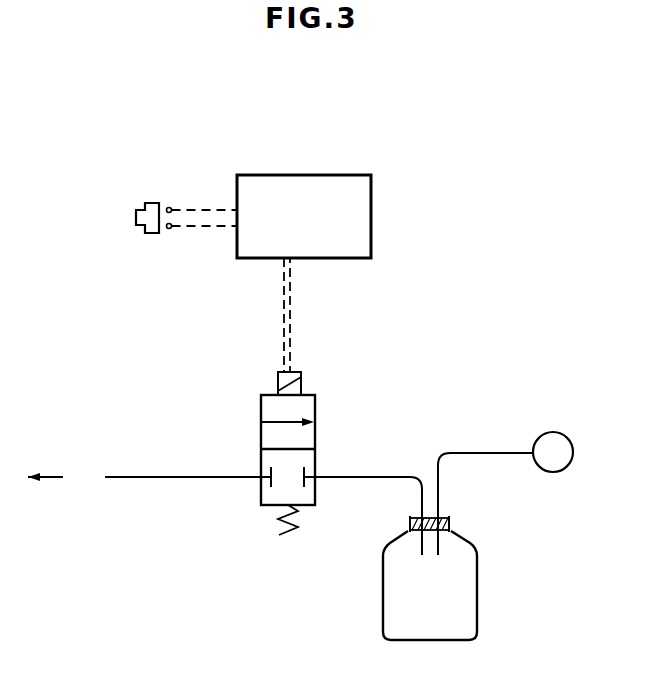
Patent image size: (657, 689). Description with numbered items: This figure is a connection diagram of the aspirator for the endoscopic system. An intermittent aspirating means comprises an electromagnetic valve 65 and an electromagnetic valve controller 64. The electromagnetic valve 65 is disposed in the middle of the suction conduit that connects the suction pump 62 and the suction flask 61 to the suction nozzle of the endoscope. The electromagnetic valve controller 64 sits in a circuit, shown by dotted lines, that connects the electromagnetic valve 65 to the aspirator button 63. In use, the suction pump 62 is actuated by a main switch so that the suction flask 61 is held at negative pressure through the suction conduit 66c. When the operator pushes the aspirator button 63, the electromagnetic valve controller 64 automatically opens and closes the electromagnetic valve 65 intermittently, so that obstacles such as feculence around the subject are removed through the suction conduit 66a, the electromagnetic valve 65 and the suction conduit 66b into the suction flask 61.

The suction flask 61 is at (464, 588).
The suction pump 62 is at (574, 452).
The aspirator button 63 is at (152, 201).
The electromagnetic valve controller 64 is at (304, 273).
The electromagnetic valve 65 is at (261, 410).
The suction conduit 66a is at (147, 479).
The suction conduit 66b is at (382, 480).
The suction conduit 66c is at (500, 455).